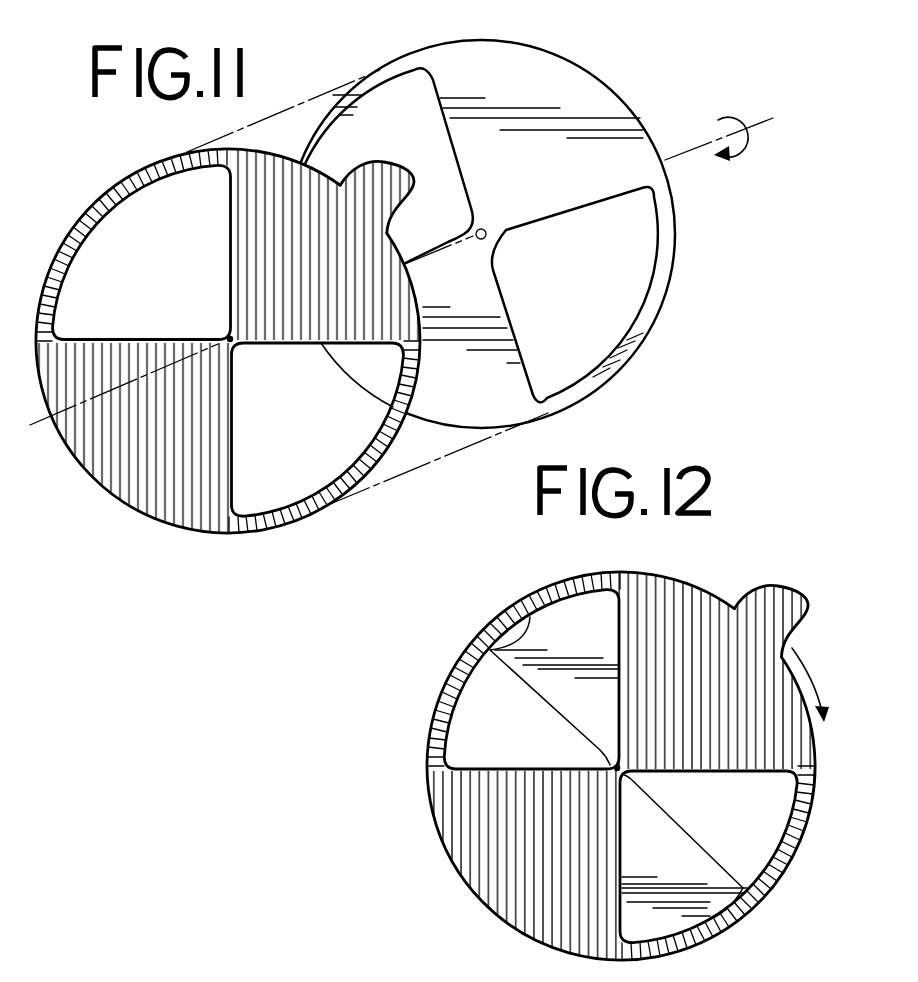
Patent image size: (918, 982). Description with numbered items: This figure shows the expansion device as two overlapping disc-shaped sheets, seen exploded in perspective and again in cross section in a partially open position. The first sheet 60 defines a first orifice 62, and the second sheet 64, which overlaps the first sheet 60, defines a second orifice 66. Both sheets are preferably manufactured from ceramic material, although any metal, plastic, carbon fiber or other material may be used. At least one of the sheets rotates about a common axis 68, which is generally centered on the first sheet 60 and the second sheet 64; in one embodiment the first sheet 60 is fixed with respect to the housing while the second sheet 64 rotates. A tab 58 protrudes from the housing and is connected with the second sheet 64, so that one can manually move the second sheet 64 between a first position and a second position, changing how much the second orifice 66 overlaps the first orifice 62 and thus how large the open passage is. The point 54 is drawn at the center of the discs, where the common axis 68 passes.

In FIG. 11, the axis of rotation 54 is at (230, 338).
In FIG. 12, the axis of rotation 54 is at (622, 770).
In FIG. 11, the tab 58 is at (398, 164).
In FIG. 12, the tab 58 is at (802, 607).
In FIG. 11, the first sheet 60 is at (562, 187).
In FIG. 12, the first sheet 60 is at (604, 631).
In FIG. 11, the first orifice 62 is at (454, 227).
In FIG. 12, the first orifice 62 is at (504, 748).
In FIG. 11, the second sheet 64 is at (163, 467).
In FIG. 12, the second sheet 64 is at (673, 618).
In FIG. 11, the second orifice 66 is at (134, 311).
In FIG. 12, the second orifice 66 is at (513, 659).
In FIG. 11, the common axis 68 is at (760, 120).